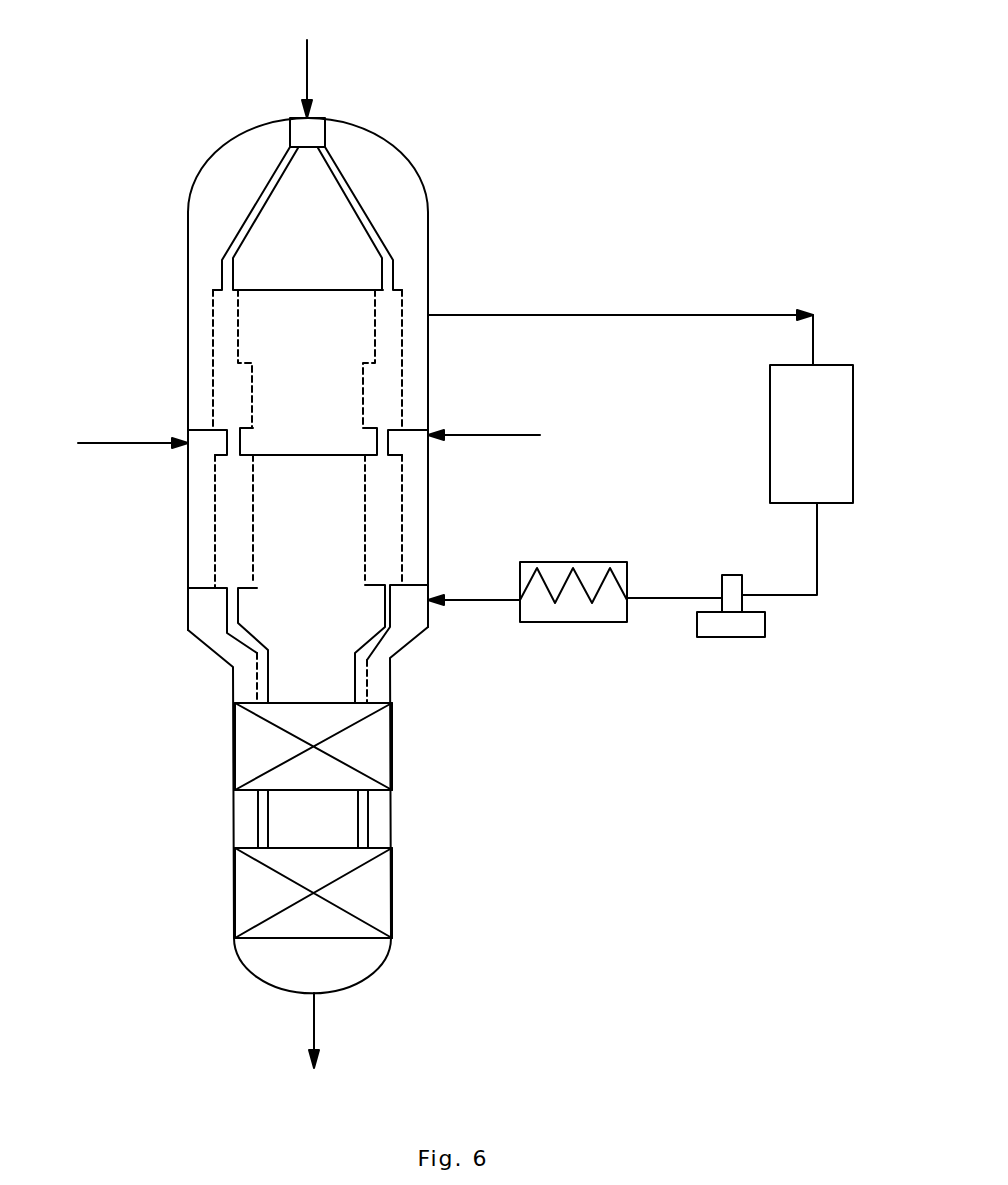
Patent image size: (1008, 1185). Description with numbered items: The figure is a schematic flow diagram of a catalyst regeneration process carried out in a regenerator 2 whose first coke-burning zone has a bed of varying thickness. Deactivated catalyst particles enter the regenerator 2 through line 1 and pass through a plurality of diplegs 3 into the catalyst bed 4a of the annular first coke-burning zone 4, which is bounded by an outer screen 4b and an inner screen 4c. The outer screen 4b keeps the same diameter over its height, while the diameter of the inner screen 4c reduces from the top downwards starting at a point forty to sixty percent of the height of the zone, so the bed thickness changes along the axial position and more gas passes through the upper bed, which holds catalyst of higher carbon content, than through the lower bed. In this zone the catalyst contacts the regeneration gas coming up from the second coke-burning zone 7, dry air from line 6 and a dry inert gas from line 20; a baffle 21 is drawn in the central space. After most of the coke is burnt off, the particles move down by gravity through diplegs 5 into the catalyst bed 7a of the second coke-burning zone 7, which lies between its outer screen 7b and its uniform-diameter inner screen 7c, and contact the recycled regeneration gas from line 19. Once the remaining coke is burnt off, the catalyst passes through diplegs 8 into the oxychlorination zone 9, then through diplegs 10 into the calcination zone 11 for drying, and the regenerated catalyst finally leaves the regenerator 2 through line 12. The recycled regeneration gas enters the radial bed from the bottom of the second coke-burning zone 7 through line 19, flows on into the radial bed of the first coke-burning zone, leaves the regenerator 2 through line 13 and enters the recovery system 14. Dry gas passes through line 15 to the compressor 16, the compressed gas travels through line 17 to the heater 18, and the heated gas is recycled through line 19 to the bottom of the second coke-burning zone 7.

The line 1 is at (322, 65).
The regenerator 2 is at (187, 227).
The diplegs 3 is at (307, 204).
The first coke-burning zone 4 is at (227, 322).
The catalyst bed of the first coke-burning zone 4a is at (310, 359).
The outer screen of the first coke-burning zone 4b is at (308, 360).
The inner screen of the first coke-burning zone 4c is at (306, 306).
The diplegs 5 is at (308, 441).
The line 6 is at (141, 435).
The second coke-burning zone 7 is at (242, 570).
The catalyst bed of the second coke-burning zone 7a is at (309, 517).
The outer screen of the second coke-burning zone 7b is at (308, 521).
The inner screen of the second coke-burning zone 7c is at (309, 469).
The diplegs 8 is at (311, 644).
The oxychlorination zone 9 is at (313, 746).
The diplegs 10 is at (313, 819).
The calcination zone 11 is at (313, 893).
The line 12 is at (322, 1044).
The line 13 is at (620, 325).
The recovery system 14 is at (811, 434).
The line 15 is at (794, 549).
The compressor 16 is at (731, 591).
The line 17 is at (674, 579).
The heater 18 is at (573, 576).
The line 19 is at (443, 637).
The line 20 is at (502, 430).
The baffle 21 is at (325, 290).